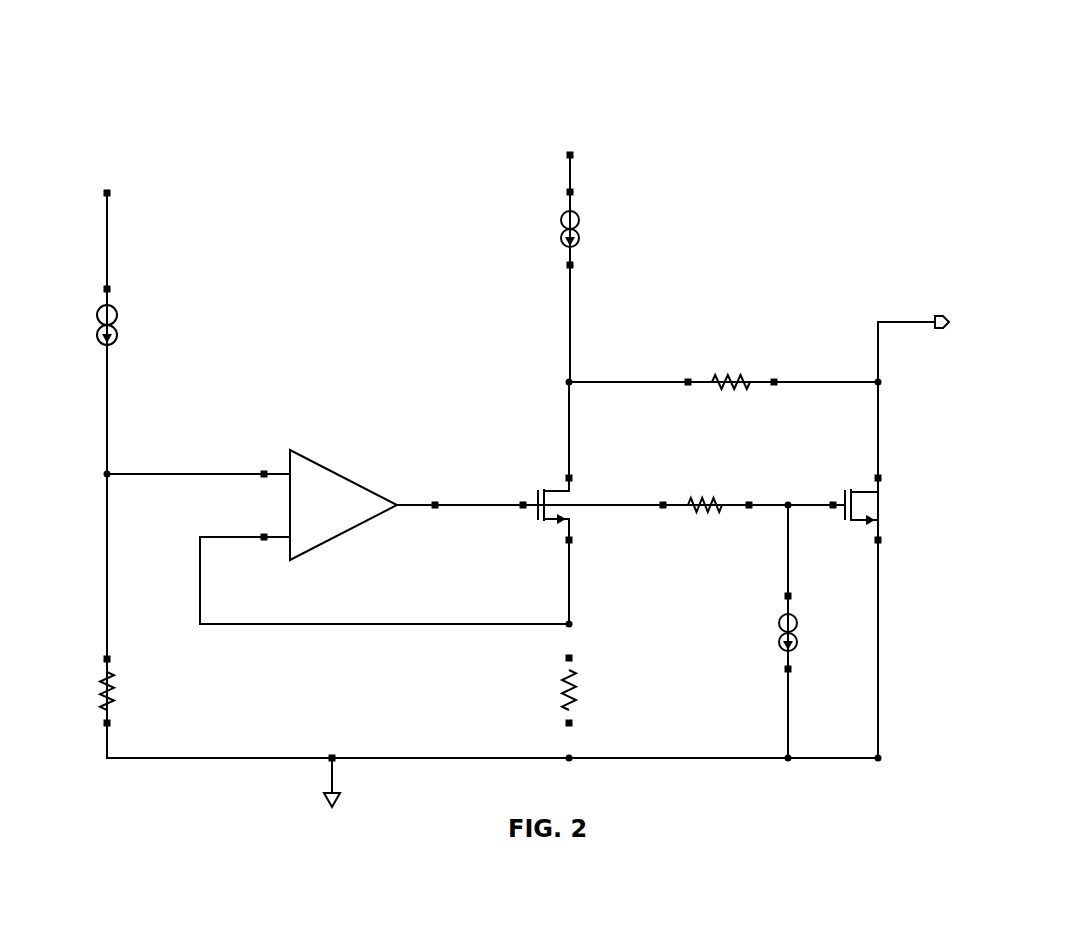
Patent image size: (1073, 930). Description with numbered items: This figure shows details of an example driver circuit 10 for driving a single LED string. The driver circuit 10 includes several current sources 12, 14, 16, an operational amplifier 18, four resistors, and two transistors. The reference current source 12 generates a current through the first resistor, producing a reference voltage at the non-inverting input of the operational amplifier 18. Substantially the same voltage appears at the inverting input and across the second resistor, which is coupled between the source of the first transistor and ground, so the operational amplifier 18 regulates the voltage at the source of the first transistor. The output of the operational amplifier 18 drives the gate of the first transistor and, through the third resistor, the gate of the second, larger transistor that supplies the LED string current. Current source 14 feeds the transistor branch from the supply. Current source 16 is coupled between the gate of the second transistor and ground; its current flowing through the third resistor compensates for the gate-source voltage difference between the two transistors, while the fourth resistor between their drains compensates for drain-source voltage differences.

The driver circuit 10 is at (185, 41).
The reference current source 12 is at (115, 324).
The current source 14 is at (565, 228).
The current source 16 is at (783, 632).
The operational amplifier 18 is at (342, 473).